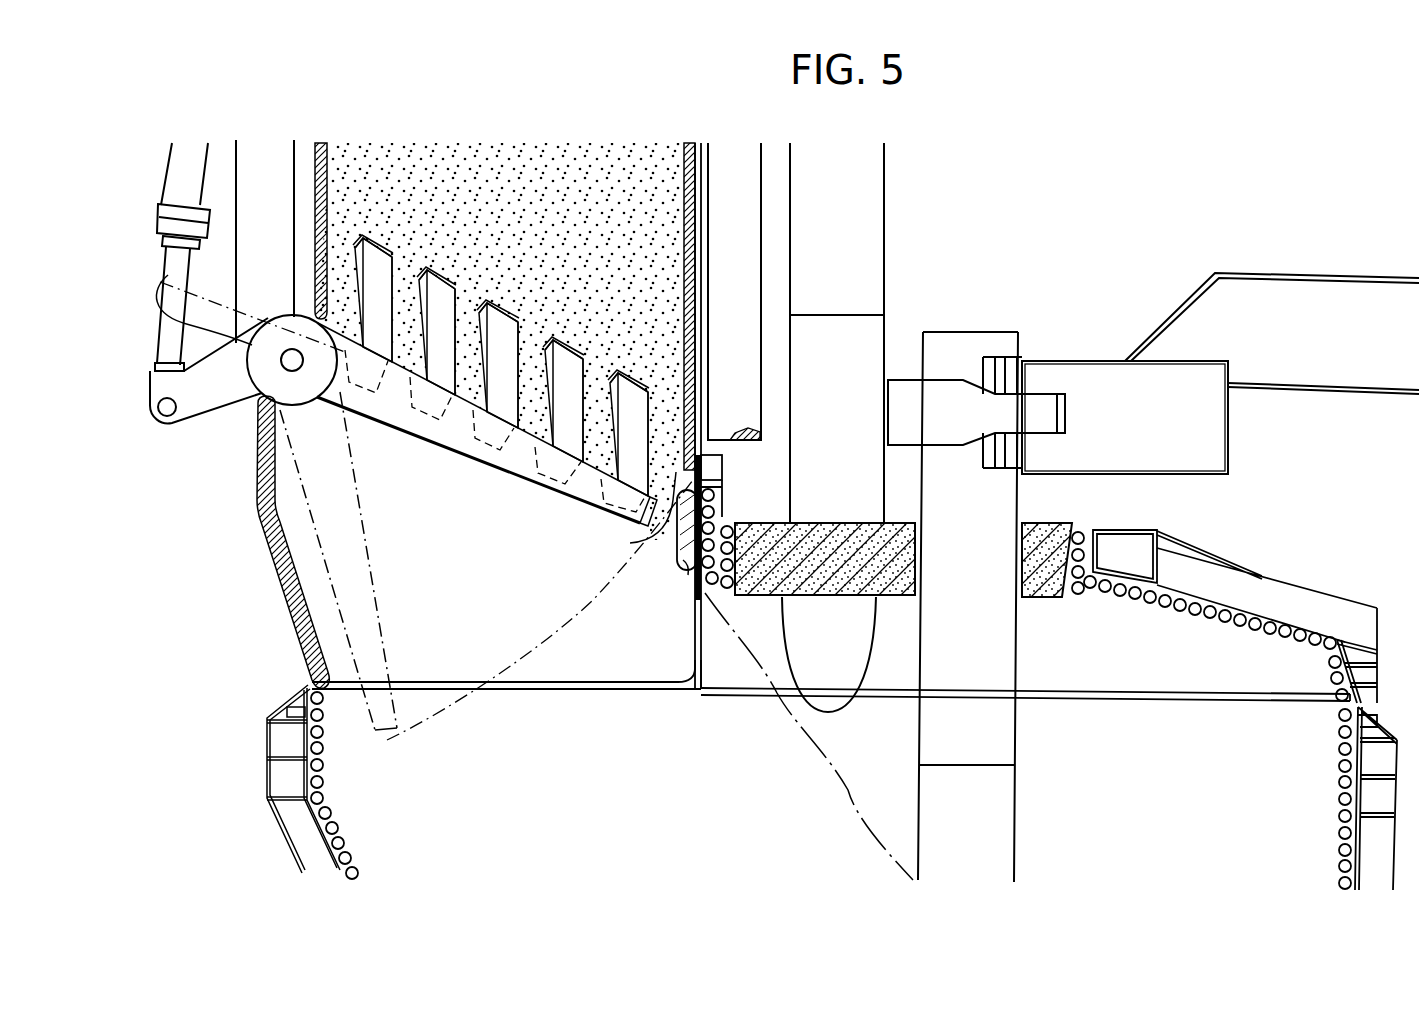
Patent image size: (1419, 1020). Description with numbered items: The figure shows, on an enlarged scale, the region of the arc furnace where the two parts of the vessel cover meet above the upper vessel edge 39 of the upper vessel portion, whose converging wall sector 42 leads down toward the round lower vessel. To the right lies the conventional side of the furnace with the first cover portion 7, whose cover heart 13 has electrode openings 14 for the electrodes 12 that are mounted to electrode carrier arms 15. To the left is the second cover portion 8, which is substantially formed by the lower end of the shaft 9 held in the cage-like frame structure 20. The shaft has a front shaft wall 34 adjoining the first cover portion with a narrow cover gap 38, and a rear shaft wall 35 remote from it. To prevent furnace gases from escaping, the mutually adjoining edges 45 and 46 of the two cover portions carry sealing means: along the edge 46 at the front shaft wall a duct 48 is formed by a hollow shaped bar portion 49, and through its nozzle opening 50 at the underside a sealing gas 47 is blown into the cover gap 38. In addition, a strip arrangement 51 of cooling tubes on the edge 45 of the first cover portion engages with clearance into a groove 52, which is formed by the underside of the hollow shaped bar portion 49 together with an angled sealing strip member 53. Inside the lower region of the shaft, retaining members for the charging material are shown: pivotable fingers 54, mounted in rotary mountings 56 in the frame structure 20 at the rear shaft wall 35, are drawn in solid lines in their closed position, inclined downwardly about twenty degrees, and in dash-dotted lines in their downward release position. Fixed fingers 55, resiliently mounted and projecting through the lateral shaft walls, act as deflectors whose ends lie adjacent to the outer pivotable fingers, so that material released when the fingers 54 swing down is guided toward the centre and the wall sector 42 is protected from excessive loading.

The first cover portion 7 is at (1083, 667).
The second cover portion 8 is at (557, 663).
The shaft 9 is at (283, 565).
The electrodes 12 is at (868, 200).
The cover heart 13 is at (1043, 563).
The electrode openings 14 is at (1018, 560).
The electrode carrier arms 15 is at (1303, 307).
The frame structure 20 is at (260, 167).
The front shaft wall 34 is at (692, 147).
The rear shaft wall 35 is at (321, 155).
The cover gap 38 is at (693, 663).
The upper vessel edge 39 is at (310, 685).
The converging wall sector 42 is at (347, 853).
The edge of the first cover portion 45 is at (702, 627).
The edge of the second cover portion 46 is at (703, 640).
The sealing gas 47 is at (687, 560).
The duct 48 is at (713, 453).
The hollow shaped bar portion 49 is at (725, 463).
The nozzle opening 50 is at (687, 477).
The strip arrangement 51 is at (693, 493).
The groove 52 is at (723, 487).
The angled sealing strip member 53 is at (727, 500).
The pivotable fingers 54 is at (447, 432).
The fixed fingers 55 is at (568, 433).
The rotary mountings 56 is at (287, 367).